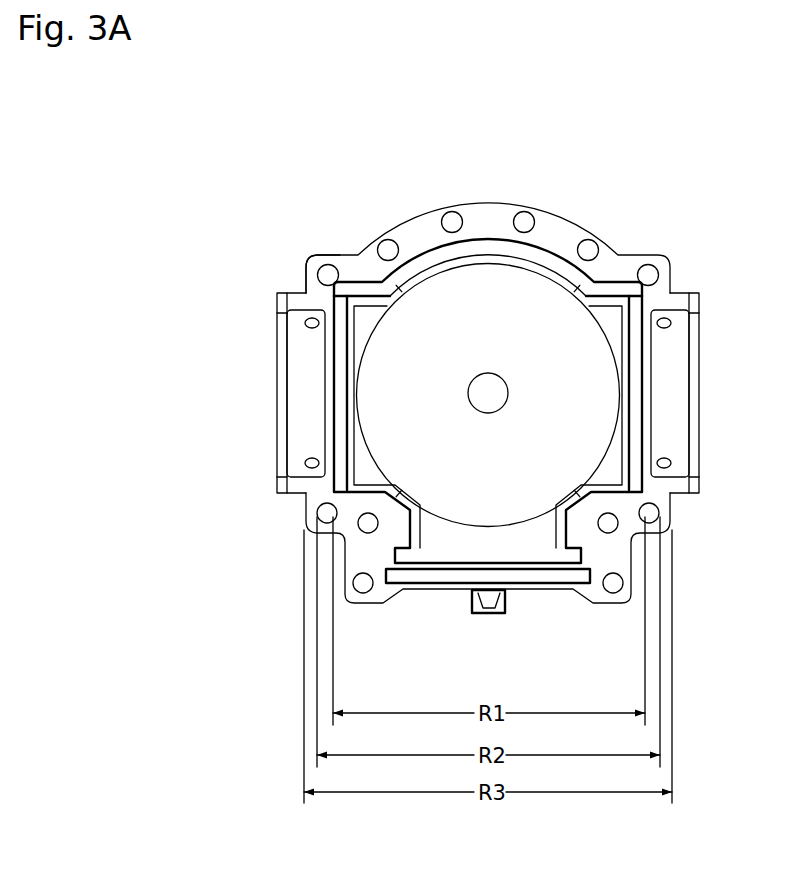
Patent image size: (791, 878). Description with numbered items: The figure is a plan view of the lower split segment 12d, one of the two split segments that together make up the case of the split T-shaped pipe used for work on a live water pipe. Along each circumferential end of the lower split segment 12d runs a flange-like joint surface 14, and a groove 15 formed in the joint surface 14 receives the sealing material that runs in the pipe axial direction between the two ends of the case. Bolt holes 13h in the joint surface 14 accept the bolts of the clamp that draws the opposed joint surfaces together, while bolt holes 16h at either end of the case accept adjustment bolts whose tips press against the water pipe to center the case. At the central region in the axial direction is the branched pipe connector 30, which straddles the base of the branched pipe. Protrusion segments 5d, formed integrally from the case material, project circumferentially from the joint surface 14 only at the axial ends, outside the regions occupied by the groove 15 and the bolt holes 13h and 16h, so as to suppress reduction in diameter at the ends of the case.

The joint surface 14 is at (433, 237).
The bolt hole 13h is at (530, 211).
The groove 15 is at (555, 254).
The lower split segment 12d is at (307, 273).
The protrusion segment 5d is at (277, 297).
The bolt hole 16h is at (311, 458).
The branched pipe connector 30 is at (542, 593).